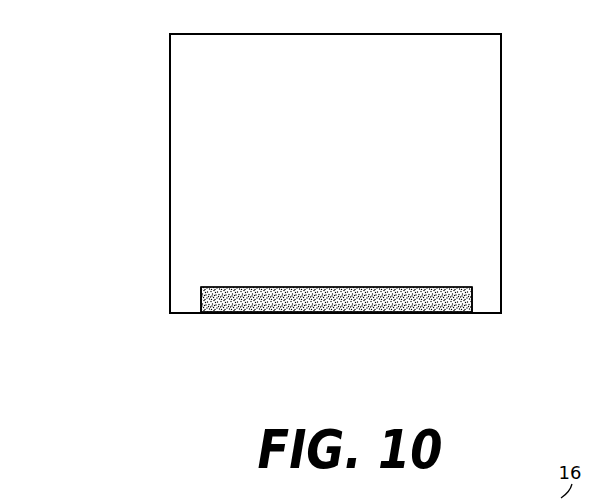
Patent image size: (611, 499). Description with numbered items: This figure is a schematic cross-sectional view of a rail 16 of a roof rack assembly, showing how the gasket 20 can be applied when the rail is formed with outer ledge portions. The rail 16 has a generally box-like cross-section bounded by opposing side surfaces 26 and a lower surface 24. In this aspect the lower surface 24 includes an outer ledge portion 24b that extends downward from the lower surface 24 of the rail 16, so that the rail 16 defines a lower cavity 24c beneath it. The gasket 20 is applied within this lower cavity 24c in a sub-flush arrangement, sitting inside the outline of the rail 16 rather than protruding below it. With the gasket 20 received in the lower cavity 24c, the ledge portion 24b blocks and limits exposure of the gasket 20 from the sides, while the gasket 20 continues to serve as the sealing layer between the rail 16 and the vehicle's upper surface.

The rail 16 is at (209, 83).
The side surface 26 is at (170, 141).
The gasket 20 is at (330, 298).
The lower surface 24 is at (266, 287).
The outer ledge portion 24b is at (182, 297).
The lower cavity 24c is at (447, 295).